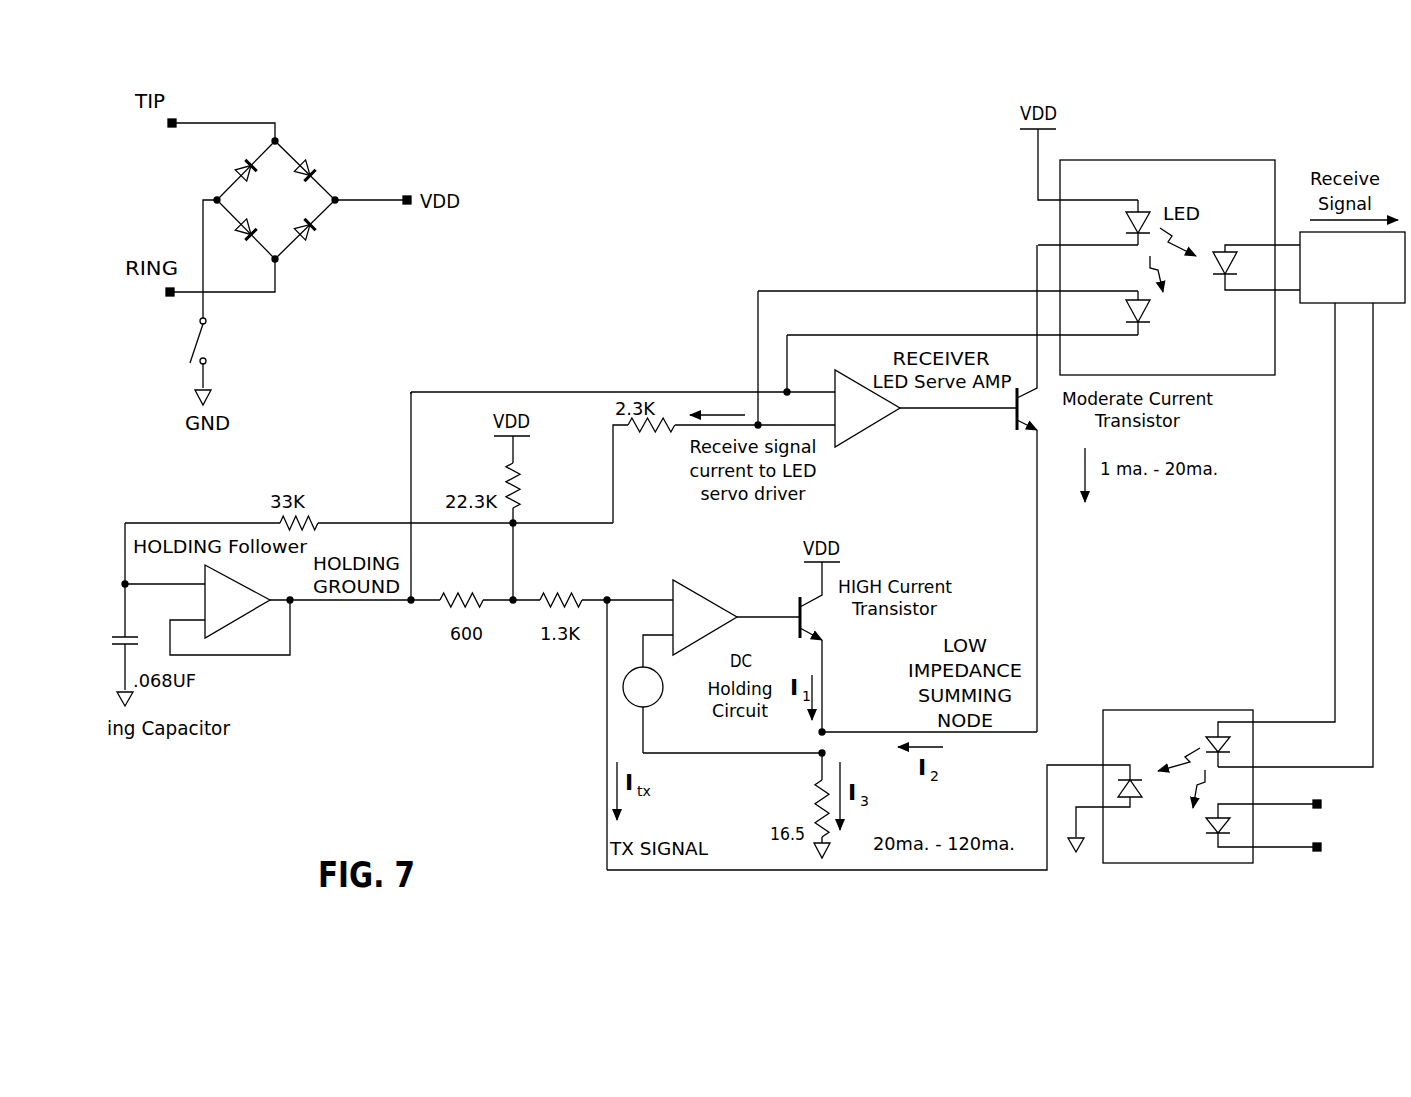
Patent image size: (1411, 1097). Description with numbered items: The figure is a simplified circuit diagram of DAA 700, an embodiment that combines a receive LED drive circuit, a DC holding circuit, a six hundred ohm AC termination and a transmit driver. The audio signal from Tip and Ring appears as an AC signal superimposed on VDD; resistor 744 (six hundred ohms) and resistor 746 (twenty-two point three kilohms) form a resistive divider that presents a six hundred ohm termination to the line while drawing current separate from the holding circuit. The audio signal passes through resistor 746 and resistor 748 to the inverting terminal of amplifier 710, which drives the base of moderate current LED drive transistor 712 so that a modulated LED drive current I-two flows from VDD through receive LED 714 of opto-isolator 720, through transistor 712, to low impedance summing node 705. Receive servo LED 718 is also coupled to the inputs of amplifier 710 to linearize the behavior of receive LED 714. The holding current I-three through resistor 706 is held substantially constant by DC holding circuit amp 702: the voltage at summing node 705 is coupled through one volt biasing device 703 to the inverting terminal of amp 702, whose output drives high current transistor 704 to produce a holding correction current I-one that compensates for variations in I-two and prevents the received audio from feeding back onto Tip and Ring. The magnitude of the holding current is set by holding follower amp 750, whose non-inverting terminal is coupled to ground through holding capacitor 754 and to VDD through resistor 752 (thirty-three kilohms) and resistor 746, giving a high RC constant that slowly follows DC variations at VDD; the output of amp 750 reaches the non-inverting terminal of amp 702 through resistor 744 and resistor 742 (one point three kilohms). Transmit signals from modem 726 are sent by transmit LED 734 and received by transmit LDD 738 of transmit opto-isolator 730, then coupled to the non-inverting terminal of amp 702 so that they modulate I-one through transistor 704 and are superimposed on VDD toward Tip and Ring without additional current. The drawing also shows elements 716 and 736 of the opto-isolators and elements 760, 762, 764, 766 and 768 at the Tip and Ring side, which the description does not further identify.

The DAA 700 is at (608, 140).
The DC holding circuit amp 702 is at (700, 592).
The 1 Volt biasing device 703 is at (654, 703).
The high current transistor 704 is at (798, 596).
The low impedance summing node 705 is at (824, 728).
The resistor 706 is at (812, 790).
The amplifier 710 is at (861, 429).
The LED drive current transistor 712 is at (1012, 431).
The receive LED 714 is at (1146, 208).
The photodiode 716 is at (1217, 288).
The receive servo LED 718 is at (1150, 325).
The opto-isolator 720 is at (1247, 158).
The modem 726 is at (1305, 312).
The transmit opto-isolator 730 is at (1230, 708).
The transmit LED 734 is at (1205, 740).
The photodiode 736 is at (1208, 818).
The transmit LDD 738 is at (1140, 798).
The resistor 742 is at (570, 594).
The resistor 744 is at (472, 594).
The resistor 746 is at (520, 498).
The resistor 748 is at (653, 438).
The holding follower amp 750 is at (237, 577).
The resistor 752 is at (318, 518).
The holding capacitor 754 is at (117, 646).
The bridge diode 760 is at (308, 148).
The bridge diode 762 is at (306, 258).
The bridge diode 764 is at (233, 246).
The bridge diode 766 is at (225, 168).
The hook switch 768 is at (207, 358).